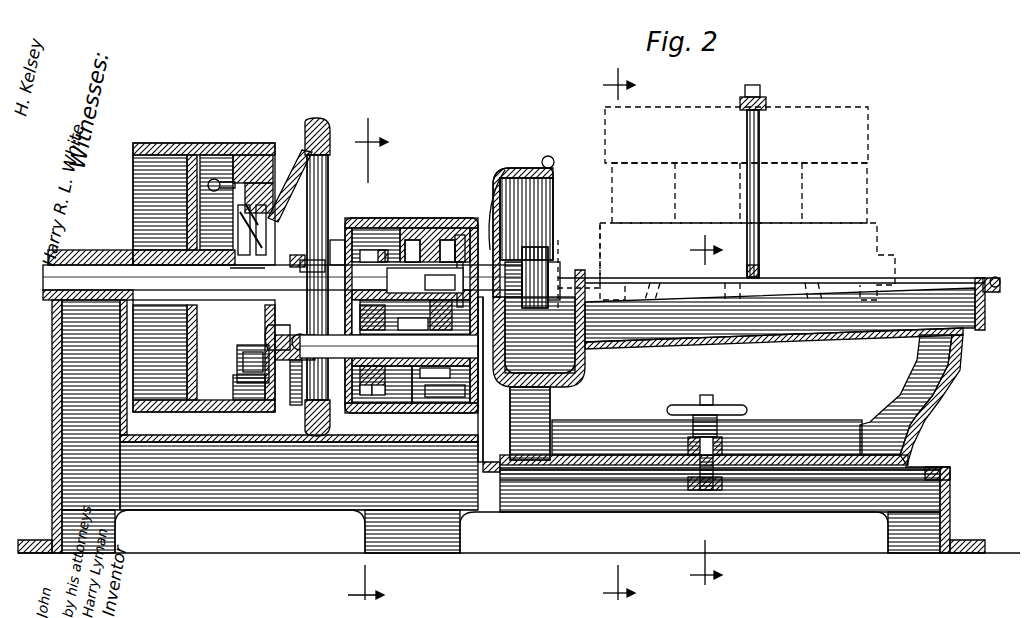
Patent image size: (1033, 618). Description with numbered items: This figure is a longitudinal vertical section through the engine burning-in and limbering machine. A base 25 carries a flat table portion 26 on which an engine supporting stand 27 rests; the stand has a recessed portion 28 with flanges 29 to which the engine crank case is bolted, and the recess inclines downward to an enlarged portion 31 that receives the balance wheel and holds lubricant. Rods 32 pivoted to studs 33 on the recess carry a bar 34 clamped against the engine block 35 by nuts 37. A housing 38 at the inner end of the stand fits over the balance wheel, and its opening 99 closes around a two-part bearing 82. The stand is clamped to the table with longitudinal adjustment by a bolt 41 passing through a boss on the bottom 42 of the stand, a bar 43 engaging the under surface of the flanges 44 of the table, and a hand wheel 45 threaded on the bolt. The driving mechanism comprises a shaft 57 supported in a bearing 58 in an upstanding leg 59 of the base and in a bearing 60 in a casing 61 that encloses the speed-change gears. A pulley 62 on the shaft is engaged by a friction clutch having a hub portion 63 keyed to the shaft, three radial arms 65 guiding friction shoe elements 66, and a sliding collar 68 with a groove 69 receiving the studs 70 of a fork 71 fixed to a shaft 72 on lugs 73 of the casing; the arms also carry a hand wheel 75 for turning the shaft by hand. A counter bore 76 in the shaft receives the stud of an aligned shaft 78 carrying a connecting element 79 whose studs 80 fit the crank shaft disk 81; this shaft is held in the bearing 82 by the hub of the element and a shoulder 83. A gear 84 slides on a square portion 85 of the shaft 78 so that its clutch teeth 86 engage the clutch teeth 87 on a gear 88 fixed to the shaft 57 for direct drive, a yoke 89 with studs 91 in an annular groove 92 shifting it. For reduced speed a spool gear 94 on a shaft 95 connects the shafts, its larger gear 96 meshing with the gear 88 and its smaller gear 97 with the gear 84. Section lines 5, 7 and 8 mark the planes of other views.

The section line 5- 5 is at (619, 337).
The section line 7- 7 is at (368, 356).
The section line 8- 8 is at (706, 417).
The base 25 is at (350, 500).
The flat table portion 26 is at (515, 482).
The engine supporting stand 27 is at (955, 378).
The recessed portion 28 is at (915, 282).
The flanges 29 is at (992, 277).
The enlarged portion 31 is at (490, 395).
The rods 32 is at (760, 142).
The studs 33 is at (760, 272).
The bar 34 is at (764, 100).
The engine block 35 is at (870, 188).
The nuts 37 is at (754, 84).
The housing 38 is at (549, 165).
The bolt 41 is at (706, 492).
The bottom of the stand 42 is at (724, 447).
The bar 43 is at (722, 483).
The flanges of the table 44 is at (568, 479).
The hand wheel 45 is at (726, 407).
The shaft 57 is at (97, 268).
The bearing 58 is at (56, 302).
The upstanding leg 59 is at (66, 372).
The bearing 60 is at (362, 224).
The casing 61 is at (232, 262).
The pulley 62 is at (214, 145).
The hub portion 63 is at (228, 308).
The radial arms 65 is at (284, 200).
The friction shoe elements 66 is at (247, 182).
The collar 68 is at (338, 240).
The groove 69 is at (300, 256).
The studs 70 is at (247, 281).
The fork 71 is at (290, 352).
The shaft 72 is at (270, 380).
The lugs 73 is at (308, 398).
The hand wheel 75 is at (320, 124).
The counter bore 76 is at (413, 326).
The shaft 78 is at (410, 250).
The connecting element 79 is at (550, 262).
The studs 80 is at (574, 312).
The crank shaft disk 81 is at (566, 252).
The two part bearing 82 is at (526, 219).
The shoulder 83 is at (502, 202).
The gear 84 is at (459, 240).
The square portion 85 is at (445, 245).
The clutch teeth 86 is at (411, 317).
The clutch teeth 87 is at (383, 250).
The gear 88 is at (376, 245).
The yoke 89 is at (442, 358).
The studs 91 is at (425, 280).
The annular groove 92 is at (398, 348).
The spool gear 94 is at (368, 395).
The shaft 95 is at (362, 398).
The larger gear 96 is at (380, 398).
The smaller gear 97 is at (433, 400).
The opening 99 is at (503, 305).